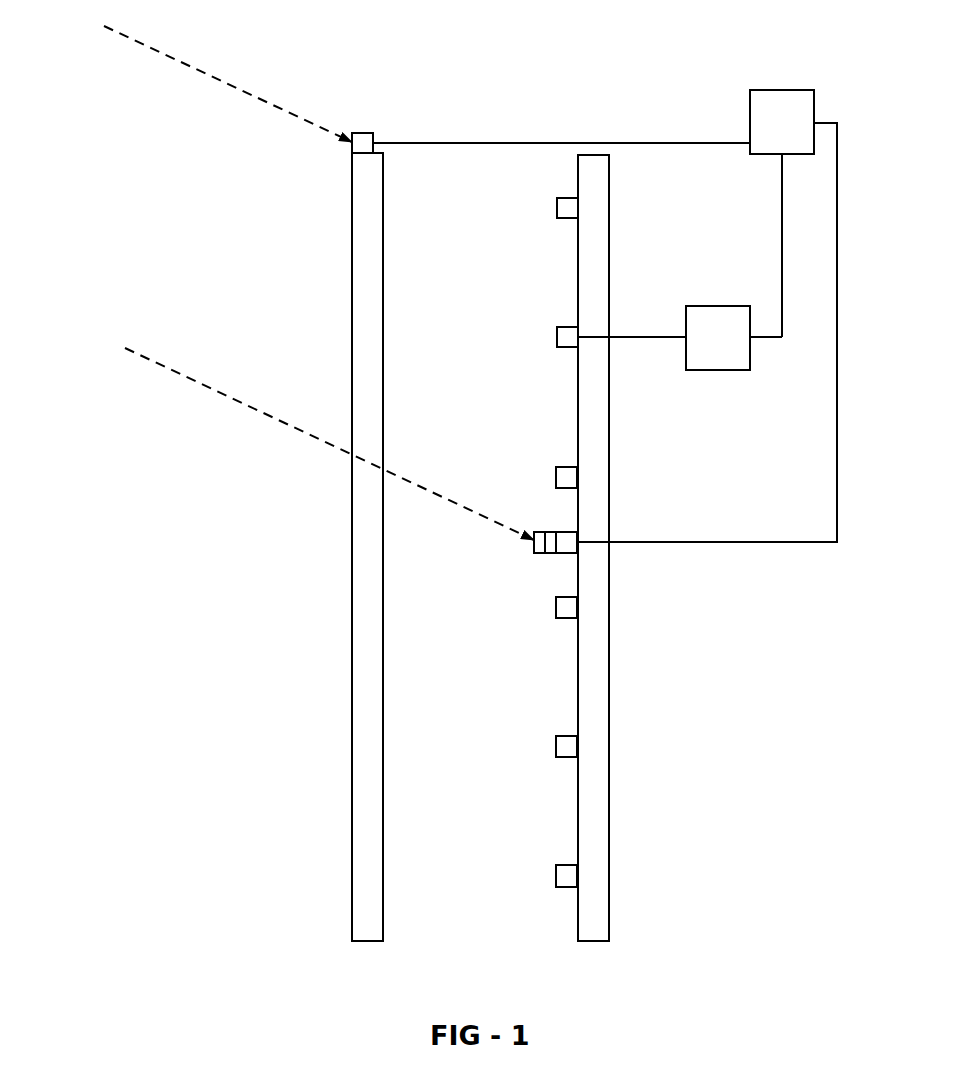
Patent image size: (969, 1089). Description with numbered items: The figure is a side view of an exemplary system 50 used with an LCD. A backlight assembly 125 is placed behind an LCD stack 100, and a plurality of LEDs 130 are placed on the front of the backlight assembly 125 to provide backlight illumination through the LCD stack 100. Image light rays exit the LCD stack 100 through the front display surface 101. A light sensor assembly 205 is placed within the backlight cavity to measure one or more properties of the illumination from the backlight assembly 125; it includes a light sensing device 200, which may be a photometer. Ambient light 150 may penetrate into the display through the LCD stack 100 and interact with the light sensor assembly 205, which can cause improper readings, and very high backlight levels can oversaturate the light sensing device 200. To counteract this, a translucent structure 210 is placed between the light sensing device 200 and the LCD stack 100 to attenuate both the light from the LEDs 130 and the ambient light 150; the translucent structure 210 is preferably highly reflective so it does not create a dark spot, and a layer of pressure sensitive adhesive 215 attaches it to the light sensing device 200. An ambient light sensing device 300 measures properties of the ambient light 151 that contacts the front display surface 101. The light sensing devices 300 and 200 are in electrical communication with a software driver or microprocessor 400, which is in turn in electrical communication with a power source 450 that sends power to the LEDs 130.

The system 50 is at (561, 143).
The LCD stack 100 is at (360, 313).
The front display surface 101 is at (351, 605).
The backlight assembly 125 is at (600, 250).
The LEDs 130 is at (557, 221).
The ambient light 150 is at (310, 438).
The ambient light 151 is at (208, 77).
The light sensing device 200 is at (566, 544).
The light sensor assembly 205 is at (563, 526).
The translucent structure 210 is at (541, 530).
The pressure sensitive adhesive 215 is at (554, 556).
The ambient light sensing device 300 is at (362, 132).
The software driver or microprocessor 400 is at (771, 89).
The power source 450 is at (717, 305).